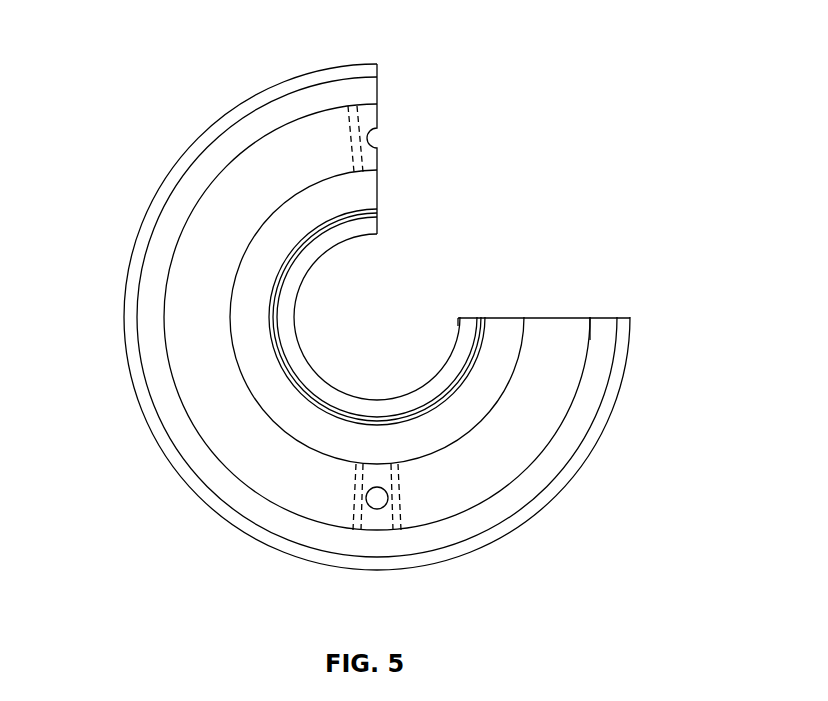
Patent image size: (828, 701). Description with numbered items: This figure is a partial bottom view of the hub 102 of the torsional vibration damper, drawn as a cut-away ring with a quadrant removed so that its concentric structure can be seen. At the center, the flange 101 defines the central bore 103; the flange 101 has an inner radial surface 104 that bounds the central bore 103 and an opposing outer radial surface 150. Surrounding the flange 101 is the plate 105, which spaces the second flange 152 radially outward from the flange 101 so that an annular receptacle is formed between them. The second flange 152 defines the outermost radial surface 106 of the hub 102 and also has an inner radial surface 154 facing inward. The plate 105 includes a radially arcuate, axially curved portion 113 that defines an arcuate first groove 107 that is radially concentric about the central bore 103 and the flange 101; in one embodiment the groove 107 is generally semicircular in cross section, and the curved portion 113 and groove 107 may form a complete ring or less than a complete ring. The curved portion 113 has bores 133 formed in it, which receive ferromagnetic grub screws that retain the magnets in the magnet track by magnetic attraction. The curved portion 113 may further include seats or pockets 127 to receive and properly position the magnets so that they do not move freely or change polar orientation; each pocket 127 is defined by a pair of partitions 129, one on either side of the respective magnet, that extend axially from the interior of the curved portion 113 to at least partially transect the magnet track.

The flange 101 is at (372, 230).
The hub 102 is at (578, 109).
The central bore 103 is at (395, 310).
The inner radial surface 104 is at (372, 232).
The plate 105 is at (595, 390).
The outermost radial surface 106 is at (188, 490).
The first groove 107 is at (220, 223).
The curved portion 113 is at (172, 332).
The pocket 127 is at (375, 528).
The partition 129 is at (402, 498).
The bore 133 is at (360, 498).
The outer radial surface 150 is at (313, 227).
The second flange 152 is at (220, 125).
The inner radial surface 154 is at (155, 410).